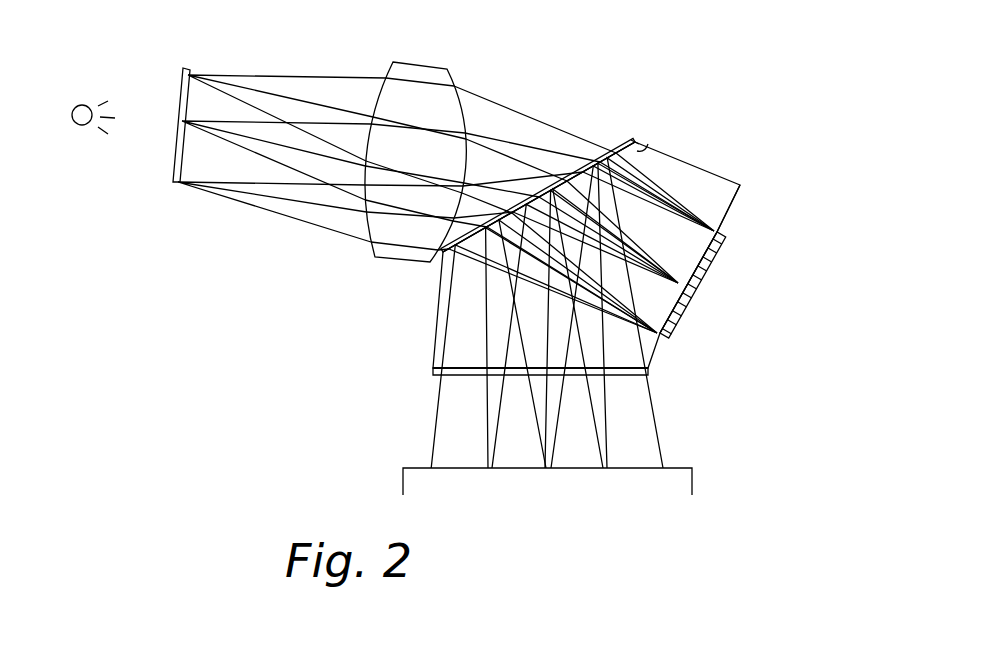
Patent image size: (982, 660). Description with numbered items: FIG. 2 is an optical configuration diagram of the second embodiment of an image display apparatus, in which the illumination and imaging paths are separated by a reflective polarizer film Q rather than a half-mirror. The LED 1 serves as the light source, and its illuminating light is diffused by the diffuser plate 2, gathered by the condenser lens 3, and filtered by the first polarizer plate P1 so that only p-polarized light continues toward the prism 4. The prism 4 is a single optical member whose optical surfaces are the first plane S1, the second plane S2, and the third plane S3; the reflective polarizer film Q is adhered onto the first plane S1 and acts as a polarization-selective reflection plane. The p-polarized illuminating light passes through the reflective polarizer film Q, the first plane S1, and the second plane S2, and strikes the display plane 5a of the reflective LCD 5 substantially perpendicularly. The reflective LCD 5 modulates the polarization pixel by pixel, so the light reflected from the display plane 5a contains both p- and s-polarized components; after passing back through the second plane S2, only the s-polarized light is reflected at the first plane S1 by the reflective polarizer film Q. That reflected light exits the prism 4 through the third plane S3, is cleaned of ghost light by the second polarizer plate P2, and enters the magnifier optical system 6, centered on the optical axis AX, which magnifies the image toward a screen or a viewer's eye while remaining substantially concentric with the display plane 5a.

The LED 1 is at (82, 101).
The diffuser plate 2 is at (181, 90).
The condenser lens 3 is at (392, 66).
The prism 4 is at (690, 163).
The reflective LCD 5 is at (706, 280).
The display plane 5a is at (704, 262).
The magnifier optical system 6 is at (692, 484).
The first polarizer plate P1 is at (617, 139).
The second polarizer plate P2 is at (650, 372).
The reflective polarizer film Q is at (634, 140).
The first plane S1 is at (646, 143).
The second plane S2 is at (729, 211).
The third plane S3 is at (463, 368).
The optical axis AX is at (545, 412).